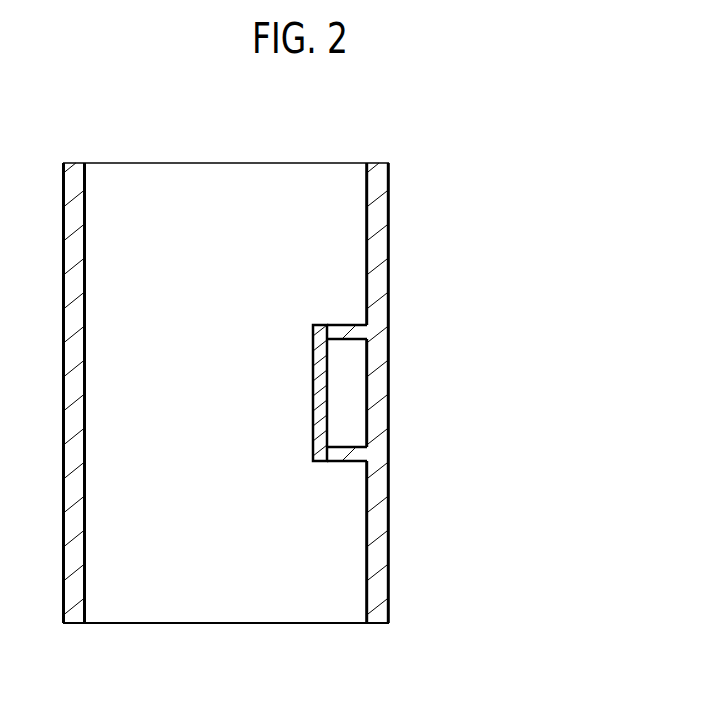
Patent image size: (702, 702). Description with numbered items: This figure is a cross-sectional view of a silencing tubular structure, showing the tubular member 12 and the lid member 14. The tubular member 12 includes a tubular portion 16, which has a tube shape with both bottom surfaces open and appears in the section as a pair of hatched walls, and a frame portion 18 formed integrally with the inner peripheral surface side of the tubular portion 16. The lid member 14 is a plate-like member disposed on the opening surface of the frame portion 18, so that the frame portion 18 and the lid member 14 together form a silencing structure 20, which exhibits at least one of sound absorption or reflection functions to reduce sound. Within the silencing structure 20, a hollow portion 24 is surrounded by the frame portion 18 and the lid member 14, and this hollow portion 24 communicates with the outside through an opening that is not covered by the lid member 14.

The tubular member 12 is at (548, 139).
The lid member 14 is at (311, 438).
The tubular portion 16 is at (388, 302).
The frame portion 18 is at (347, 325).
The silencing structure 20 is at (289, 394).
The hollow portion 24 is at (348, 402).